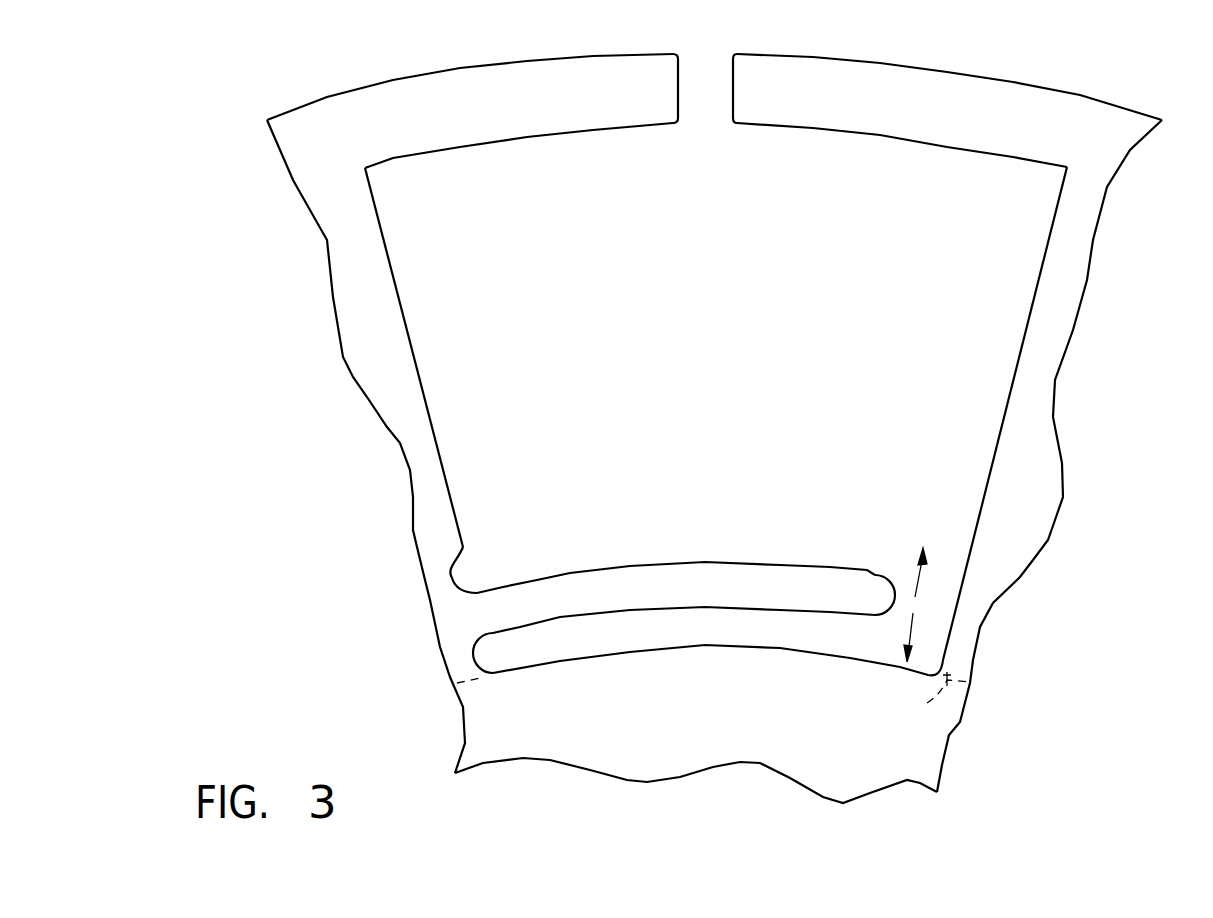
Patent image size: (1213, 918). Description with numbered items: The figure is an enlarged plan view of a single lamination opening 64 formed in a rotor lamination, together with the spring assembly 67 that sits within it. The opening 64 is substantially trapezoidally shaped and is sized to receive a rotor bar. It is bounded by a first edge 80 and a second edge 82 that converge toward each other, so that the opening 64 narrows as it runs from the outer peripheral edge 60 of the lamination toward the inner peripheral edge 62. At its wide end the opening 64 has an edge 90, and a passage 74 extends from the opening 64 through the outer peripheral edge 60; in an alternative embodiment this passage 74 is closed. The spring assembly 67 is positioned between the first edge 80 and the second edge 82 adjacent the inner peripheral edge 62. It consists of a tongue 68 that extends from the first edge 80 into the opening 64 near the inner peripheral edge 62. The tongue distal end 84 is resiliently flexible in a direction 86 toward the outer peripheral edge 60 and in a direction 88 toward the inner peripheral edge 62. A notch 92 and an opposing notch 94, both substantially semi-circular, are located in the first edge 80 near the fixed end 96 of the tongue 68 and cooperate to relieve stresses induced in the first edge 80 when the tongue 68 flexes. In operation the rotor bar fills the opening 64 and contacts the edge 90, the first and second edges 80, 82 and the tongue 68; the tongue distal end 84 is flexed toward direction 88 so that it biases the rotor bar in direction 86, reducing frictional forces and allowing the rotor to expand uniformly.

The outer peripheral edge 60 is at (1085, 97).
The inner peripheral edge 62 is at (922, 705).
The lamination opening 64 is at (712, 340).
The spring assembly 67 is at (937, 563).
The tongue 68 is at (691, 596).
The passage 74 is at (707, 107).
The first edge 80 is at (413, 344).
The second edge 82 is at (1022, 340).
The tongue distal end 84 is at (882, 597).
The direction 86 is at (915, 593).
The direction 88 is at (910, 627).
The edge 90 is at (508, 142).
The notch 92 is at (473, 653).
The opposing notch 94 is at (452, 590).
The fixed end 96 is at (477, 613).